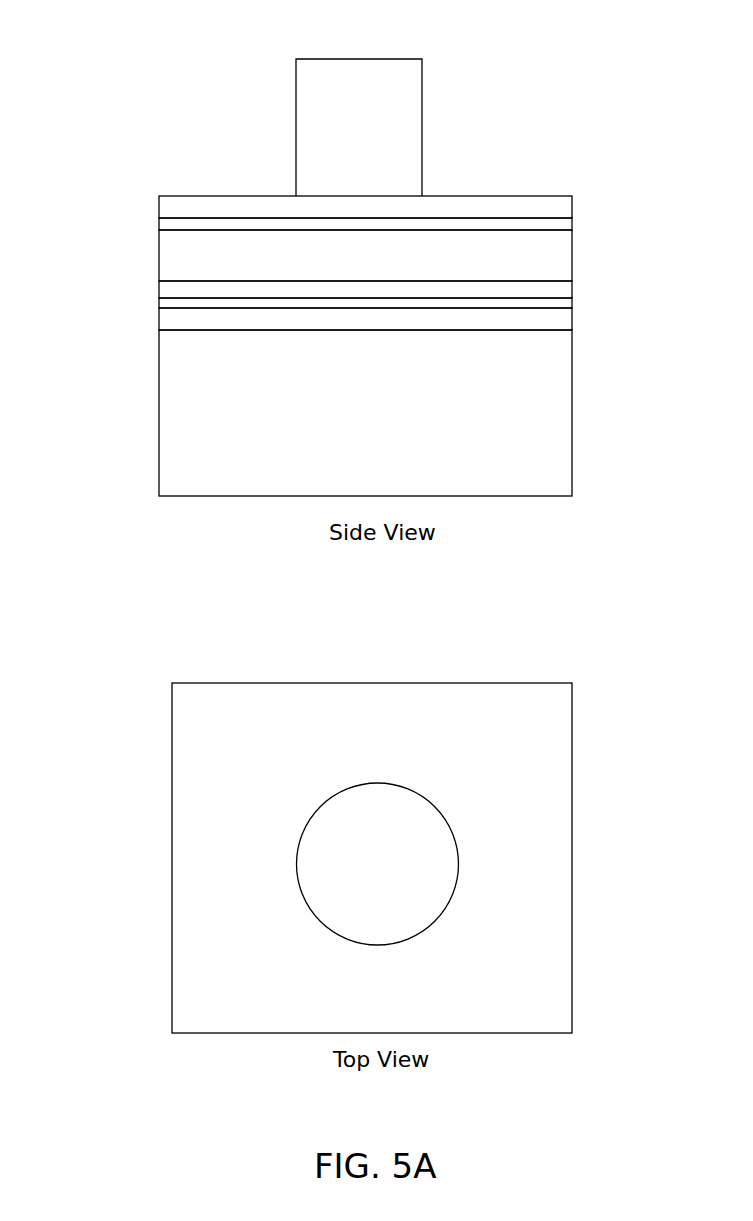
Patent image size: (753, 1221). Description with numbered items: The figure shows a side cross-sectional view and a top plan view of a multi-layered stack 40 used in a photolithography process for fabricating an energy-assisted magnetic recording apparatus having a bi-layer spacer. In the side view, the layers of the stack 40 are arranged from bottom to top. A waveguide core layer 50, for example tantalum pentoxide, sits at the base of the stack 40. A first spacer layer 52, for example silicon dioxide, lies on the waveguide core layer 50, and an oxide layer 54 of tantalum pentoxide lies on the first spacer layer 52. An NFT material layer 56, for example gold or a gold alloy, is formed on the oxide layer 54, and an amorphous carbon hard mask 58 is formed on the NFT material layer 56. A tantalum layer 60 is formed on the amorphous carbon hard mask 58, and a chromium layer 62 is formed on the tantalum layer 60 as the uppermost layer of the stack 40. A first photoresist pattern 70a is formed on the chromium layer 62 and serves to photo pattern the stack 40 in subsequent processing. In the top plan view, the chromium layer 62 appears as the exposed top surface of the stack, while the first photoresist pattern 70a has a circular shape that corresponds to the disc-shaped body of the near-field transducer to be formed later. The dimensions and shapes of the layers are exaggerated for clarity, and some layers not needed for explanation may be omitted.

The multi-layered stack 40 is at (114, 102).
The waveguide core layer 50 is at (159, 360).
The first spacer layer 52 is at (572, 320).
The oxide layer 54 is at (159, 305).
The NFT material layer 56 is at (159, 288).
The amorphous carbon hard mask 58 is at (572, 263).
The tantalum layer 60 is at (159, 222).
The chromium layer 62 is at (572, 208).
The first photoresist pattern 70a is at (422, 95).